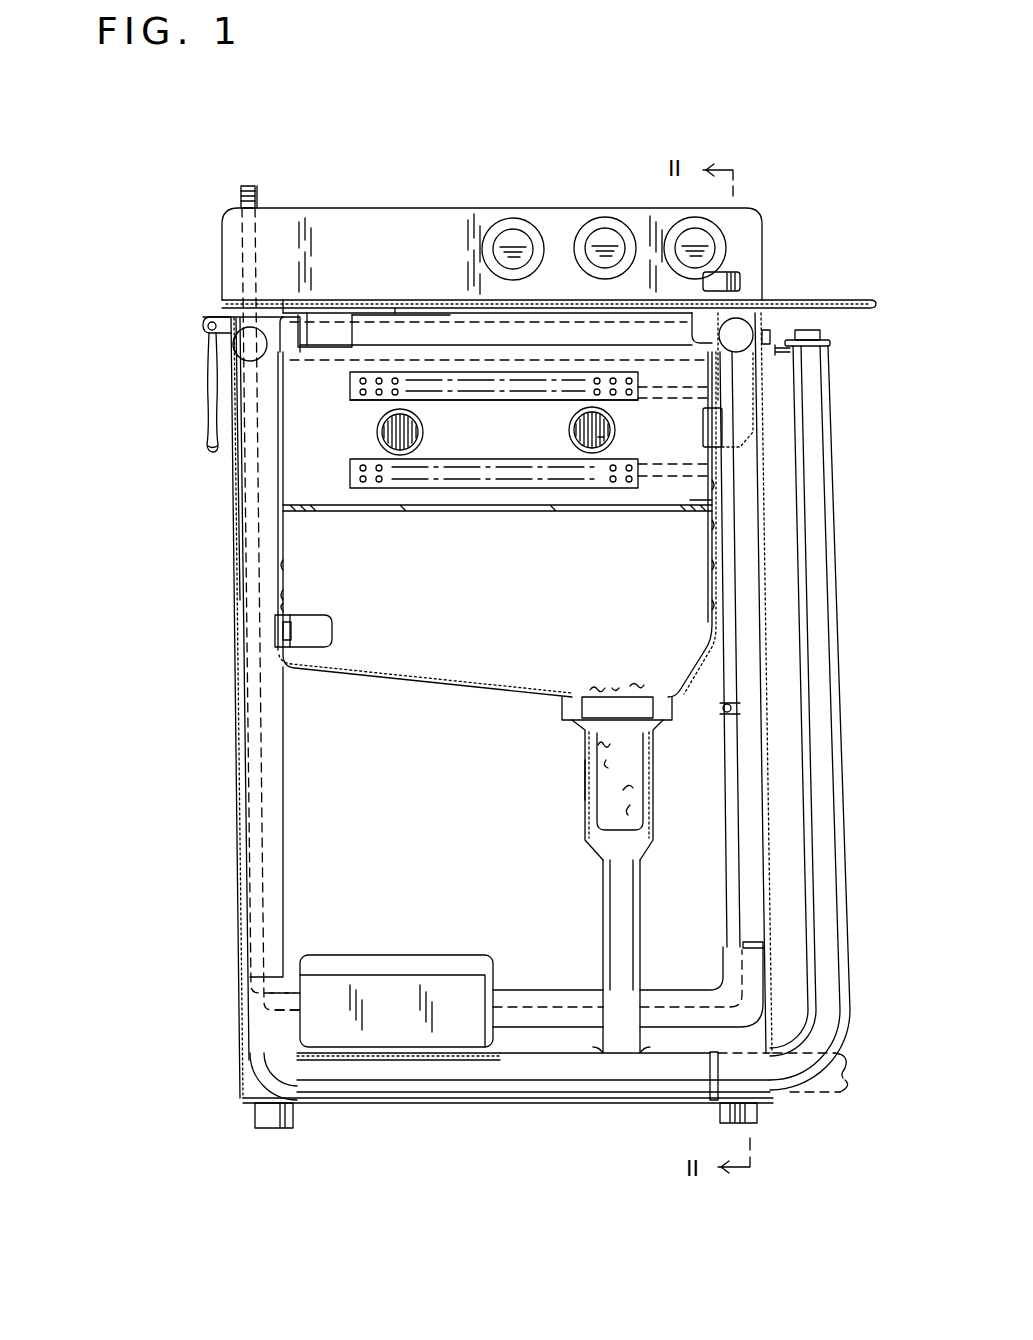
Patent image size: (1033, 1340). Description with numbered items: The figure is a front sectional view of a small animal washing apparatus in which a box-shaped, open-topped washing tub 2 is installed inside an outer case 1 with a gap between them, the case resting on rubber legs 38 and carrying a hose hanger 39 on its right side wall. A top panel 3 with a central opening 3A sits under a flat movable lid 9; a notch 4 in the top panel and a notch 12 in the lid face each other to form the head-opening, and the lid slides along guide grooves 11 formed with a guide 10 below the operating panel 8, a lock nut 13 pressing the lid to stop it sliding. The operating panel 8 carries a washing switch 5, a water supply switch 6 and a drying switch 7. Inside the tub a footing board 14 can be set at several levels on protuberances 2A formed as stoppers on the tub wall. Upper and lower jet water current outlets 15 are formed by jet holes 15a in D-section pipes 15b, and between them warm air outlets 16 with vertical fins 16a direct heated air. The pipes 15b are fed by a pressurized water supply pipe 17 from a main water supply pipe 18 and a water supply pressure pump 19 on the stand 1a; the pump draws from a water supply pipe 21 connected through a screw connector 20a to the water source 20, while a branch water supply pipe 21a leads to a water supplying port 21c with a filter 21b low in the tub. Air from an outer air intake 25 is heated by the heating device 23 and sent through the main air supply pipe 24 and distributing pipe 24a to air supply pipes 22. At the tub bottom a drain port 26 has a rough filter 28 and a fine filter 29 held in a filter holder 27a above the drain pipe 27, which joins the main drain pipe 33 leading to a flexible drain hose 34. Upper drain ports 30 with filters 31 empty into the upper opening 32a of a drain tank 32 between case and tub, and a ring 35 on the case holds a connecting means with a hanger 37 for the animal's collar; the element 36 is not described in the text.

The outer case 1 is at (232, 769).
The stand 1a is at (383, 1062).
The washing tub 2 is at (427, 684).
The protuberances 2A is at (283, 578).
The top panel 3 is at (266, 277).
The opening 3A is at (447, 333).
The notch 4 is at (320, 333).
The washing switch 5 is at (498, 237).
The water supply switch 6 is at (592, 240).
The drying switch 7 is at (703, 242).
The operating panel 8 is at (755, 236).
The movable lid 9 is at (838, 298).
The guide 10 is at (367, 300).
The guide grooves 11 is at (292, 300).
The notch 12 is at (395, 305).
The lock nut 13 is at (741, 281).
The footing board 14 is at (540, 512).
The jet water current outlets 15 is at (490, 400).
The jet holes 15a is at (360, 399).
The pipe 15b is at (478, 490).
The warm air outlet 16 is at (423, 432).
The vertical fins 16a is at (600, 437).
The pressurized water supply pipe 17 is at (680, 477).
The main water supply pipe 18 is at (740, 813).
The water supply pressure pump 19 is at (400, 954).
The water supply source connection 20 is at (242, 190).
The connector 20a is at (258, 195).
The water supply pipe 21 is at (232, 563).
The branch water supply pipe 21a is at (267, 650).
The filter 21b is at (333, 632).
The water supplying port 21c is at (290, 635).
The air supply pipes 22 is at (762, 384).
The heating device 23 is at (343, 976).
The main air supply pipe 24 is at (678, 990).
The distributing pipe 24a is at (237, 336).
The outer air intake 25 is at (240, 1007).
The drain port 26 is at (607, 710).
The drain pipe 27 is at (643, 876).
The filter holder 27a is at (656, 798).
The rough filter 28 is at (627, 686).
The filter 29 is at (584, 782).
The upper drain ports 30 is at (287, 367).
The filter 31 is at (295, 352).
The drain tank 32 is at (236, 815).
The upper opening 32a is at (278, 353).
The main drain pipe 33 is at (573, 1081).
The flexible drain hose 34 is at (846, 900).
The ring 35 is at (204, 323).
The pin 36 is at (207, 403).
The hanger 37 is at (207, 443).
The rubber legs 38 is at (275, 1127).
The hose hanger 39 is at (778, 348).